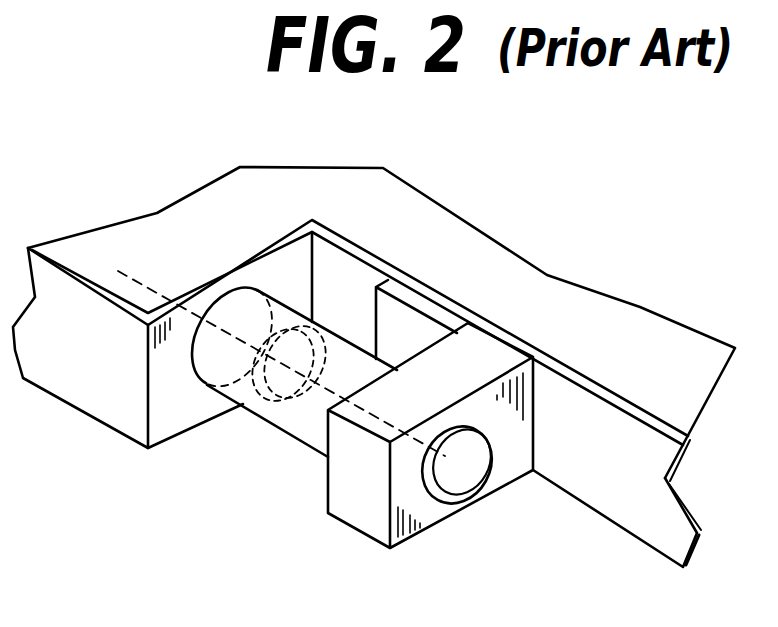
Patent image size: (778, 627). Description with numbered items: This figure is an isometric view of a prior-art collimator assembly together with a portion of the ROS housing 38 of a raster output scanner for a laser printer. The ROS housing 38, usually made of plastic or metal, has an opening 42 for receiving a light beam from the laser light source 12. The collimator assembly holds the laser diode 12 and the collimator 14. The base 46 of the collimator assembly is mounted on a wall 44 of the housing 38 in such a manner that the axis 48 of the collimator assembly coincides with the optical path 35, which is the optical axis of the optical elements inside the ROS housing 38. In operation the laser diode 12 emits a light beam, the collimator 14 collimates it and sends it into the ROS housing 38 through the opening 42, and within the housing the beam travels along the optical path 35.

The laser light source 12 is at (462, 478).
The collimator 14 is at (243, 405).
The optical path 35 is at (137, 278).
The ROS housing 38 is at (637, 325).
The opening 42 is at (230, 375).
The wall 44 is at (634, 520).
The base 46 is at (397, 318).
The axis 48 is at (300, 405).